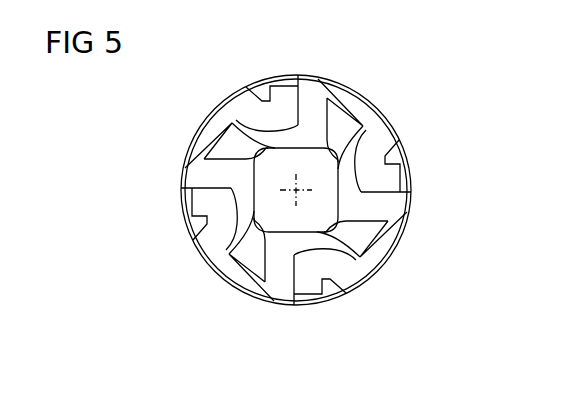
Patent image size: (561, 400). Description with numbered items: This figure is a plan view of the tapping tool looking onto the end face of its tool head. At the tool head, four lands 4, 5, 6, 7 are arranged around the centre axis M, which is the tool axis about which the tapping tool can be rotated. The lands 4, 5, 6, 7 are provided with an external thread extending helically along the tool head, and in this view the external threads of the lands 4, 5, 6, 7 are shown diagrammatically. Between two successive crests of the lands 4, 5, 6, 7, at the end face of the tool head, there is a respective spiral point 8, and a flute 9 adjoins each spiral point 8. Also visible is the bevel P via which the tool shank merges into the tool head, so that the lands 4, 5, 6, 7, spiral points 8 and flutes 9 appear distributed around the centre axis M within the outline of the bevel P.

The land 4 is at (385, 240).
The land 5 is at (352, 100).
The land 6 is at (195, 138).
The land 7 is at (293, 193).
The spiral point 8 is at (307, 103).
The flute 9 is at (262, 115).
The centre axis M is at (234, 287).
The bevel P is at (397, 127).